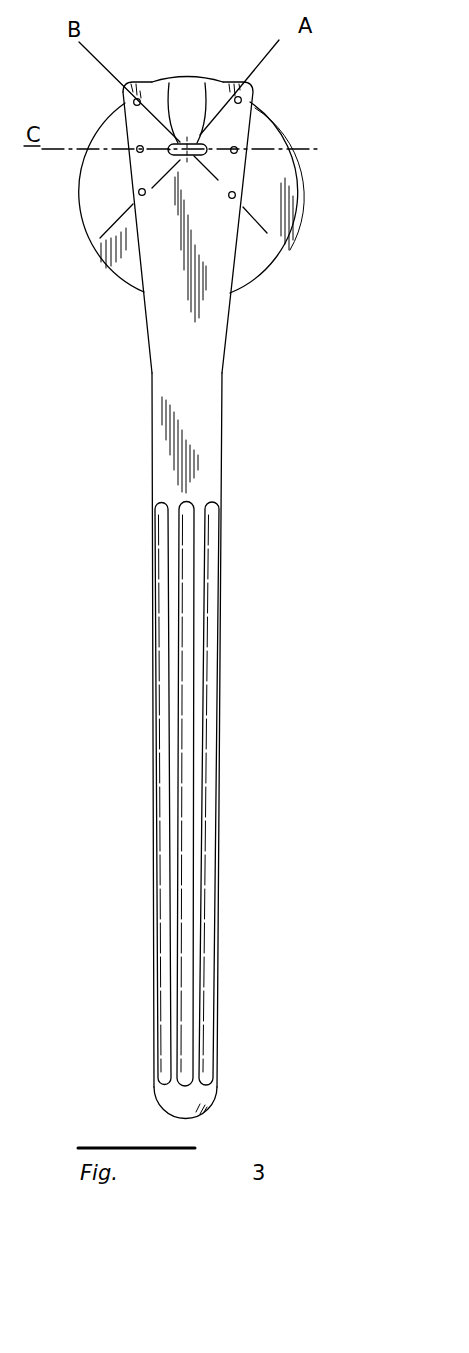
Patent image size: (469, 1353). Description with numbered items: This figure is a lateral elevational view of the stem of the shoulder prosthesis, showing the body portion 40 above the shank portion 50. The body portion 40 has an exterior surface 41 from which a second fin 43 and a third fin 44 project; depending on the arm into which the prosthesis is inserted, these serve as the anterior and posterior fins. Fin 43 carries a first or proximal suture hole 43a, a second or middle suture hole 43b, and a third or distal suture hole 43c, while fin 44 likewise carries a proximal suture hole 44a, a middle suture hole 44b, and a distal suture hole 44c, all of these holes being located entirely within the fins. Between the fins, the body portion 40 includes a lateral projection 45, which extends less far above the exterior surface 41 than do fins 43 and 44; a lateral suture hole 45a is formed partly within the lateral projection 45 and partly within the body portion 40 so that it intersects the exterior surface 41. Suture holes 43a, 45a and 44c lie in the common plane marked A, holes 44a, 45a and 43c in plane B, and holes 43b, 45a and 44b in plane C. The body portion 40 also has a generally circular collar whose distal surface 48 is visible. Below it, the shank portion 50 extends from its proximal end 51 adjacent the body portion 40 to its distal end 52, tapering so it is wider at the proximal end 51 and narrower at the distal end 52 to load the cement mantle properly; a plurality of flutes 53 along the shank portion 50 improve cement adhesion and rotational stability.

The body portion 40 is at (140, 322).
The exterior surface 41 is at (200, 230).
The second fin 43 is at (233, 258).
The first or proximal suture hole 43a is at (240, 100).
The second or middle suture hole 43b is at (250, 121).
The third or distal suture hole 43c is at (236, 194).
The third fin 44 is at (142, 245).
The first or proximal suture hole 44a is at (137, 103).
The second or middle suture hole 44b is at (140, 152).
The third or distal suture hole 44c is at (142, 193).
The lateral projection 45 is at (191, 138).
The lateral suture hole 45a is at (176, 138).
The second or distal surface 48 is at (97, 203).
The shank portion 50 is at (145, 852).
The first or proximal end 51 is at (198, 455).
The second or distal end 52 is at (203, 1110).
The flutes 53 is at (160, 970).